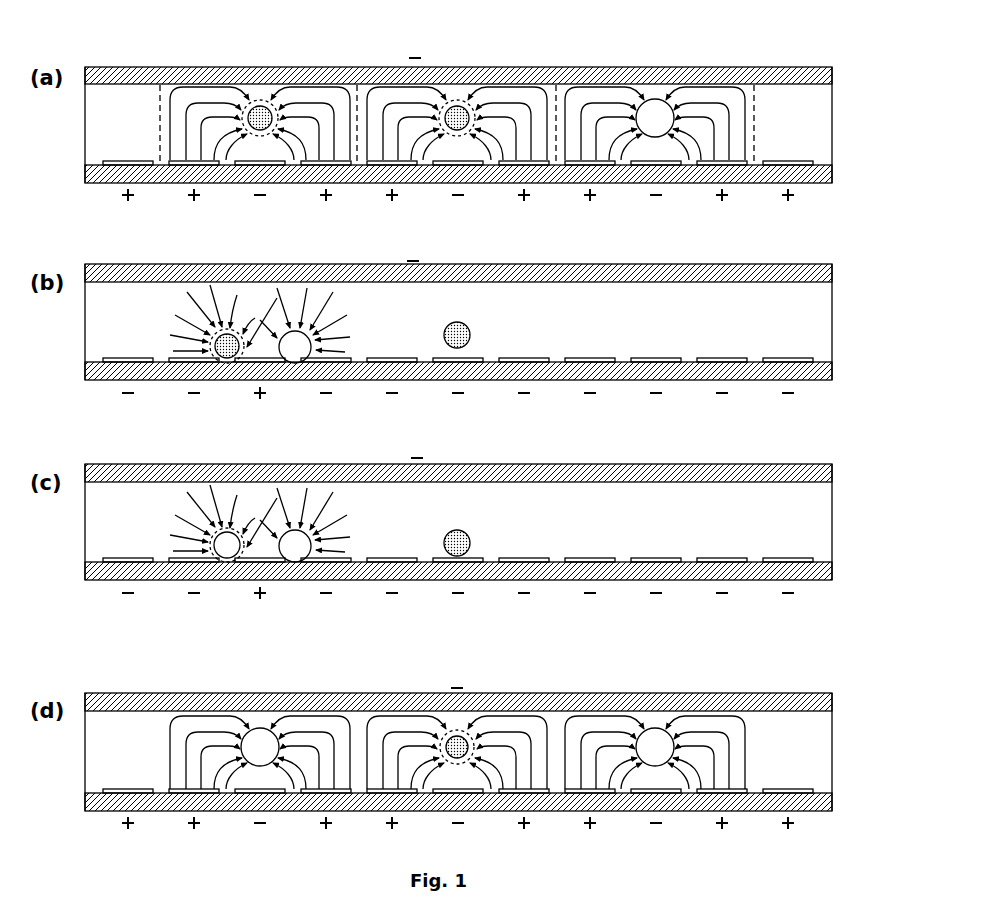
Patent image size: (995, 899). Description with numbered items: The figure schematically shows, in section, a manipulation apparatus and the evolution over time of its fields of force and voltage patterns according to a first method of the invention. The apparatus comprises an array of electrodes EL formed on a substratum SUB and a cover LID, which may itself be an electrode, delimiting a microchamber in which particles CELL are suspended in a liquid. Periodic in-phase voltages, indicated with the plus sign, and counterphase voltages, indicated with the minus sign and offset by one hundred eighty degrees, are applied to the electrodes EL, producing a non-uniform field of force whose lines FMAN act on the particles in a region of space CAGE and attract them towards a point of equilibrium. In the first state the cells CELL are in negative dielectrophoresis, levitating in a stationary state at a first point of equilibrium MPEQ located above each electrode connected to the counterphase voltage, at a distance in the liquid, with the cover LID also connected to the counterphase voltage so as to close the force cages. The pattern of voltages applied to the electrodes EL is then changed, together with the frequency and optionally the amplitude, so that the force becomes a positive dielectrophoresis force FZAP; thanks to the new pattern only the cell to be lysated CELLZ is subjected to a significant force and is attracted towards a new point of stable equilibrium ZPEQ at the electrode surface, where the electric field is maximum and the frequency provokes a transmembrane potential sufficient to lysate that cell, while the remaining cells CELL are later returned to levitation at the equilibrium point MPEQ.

The cover LID is at (733, 72).
The substrate SUB is at (752, 174).
The electrodes EL is at (777, 160).
The region of space CAGE is at (608, 63).
The field manifold / field lines FMAN is at (205, 100).
The cell to be lysated CELLZ is at (262, 106).
The particles CELL is at (472, 115).
The point of equilibrium MPEQ is at (668, 100).
The pDEP force FZAP is at (170, 305).
The point of equilibrium ZPEQ is at (299, 328).